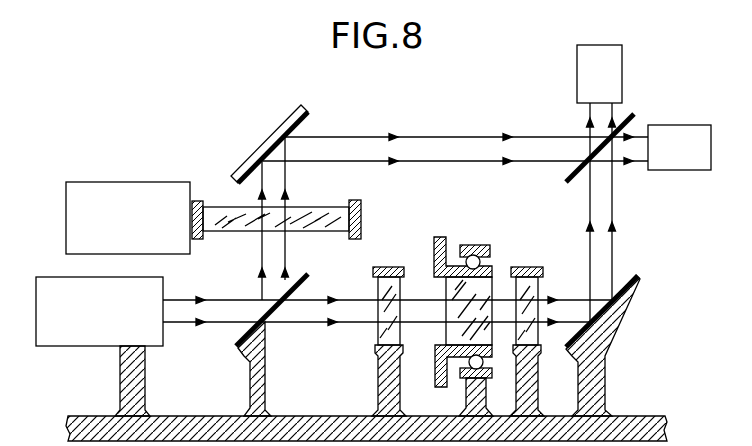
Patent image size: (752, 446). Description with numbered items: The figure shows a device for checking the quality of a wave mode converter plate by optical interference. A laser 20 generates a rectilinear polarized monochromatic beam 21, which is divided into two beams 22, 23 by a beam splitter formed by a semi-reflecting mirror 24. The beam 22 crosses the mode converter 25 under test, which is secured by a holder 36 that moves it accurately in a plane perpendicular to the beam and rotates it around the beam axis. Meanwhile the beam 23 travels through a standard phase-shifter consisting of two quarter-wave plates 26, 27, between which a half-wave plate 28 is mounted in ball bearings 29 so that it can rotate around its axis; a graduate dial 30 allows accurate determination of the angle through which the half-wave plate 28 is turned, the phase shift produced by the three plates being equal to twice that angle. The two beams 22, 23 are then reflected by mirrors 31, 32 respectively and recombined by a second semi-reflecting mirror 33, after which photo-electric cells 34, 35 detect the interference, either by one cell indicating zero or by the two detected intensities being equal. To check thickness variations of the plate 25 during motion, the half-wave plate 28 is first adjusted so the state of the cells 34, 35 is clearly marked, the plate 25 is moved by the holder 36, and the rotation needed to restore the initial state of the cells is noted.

The laser 20 is at (64, 346).
The beam 21 is at (190, 322).
The beam 22 is at (268, 256).
The beam 23 is at (314, 322).
The semi-reflecting mirror 24 is at (302, 284).
The mode converter 25 is at (300, 210).
The quarter-wave plate 26 is at (375, 340).
The quarter-wave plate 27 is at (546, 290).
The half-wave plate 28 is at (447, 334).
The ball bearings 29 is at (486, 262).
The graduate dial 30 is at (434, 242).
The mirror 31 is at (268, 148).
The mirror 32 is at (632, 280).
The semi-reflecting mirror 33 is at (566, 180).
The photo-electric cell 34 is at (599, 74).
The photo-electric cell 35 is at (679, 147).
The holder 36 is at (128, 182).